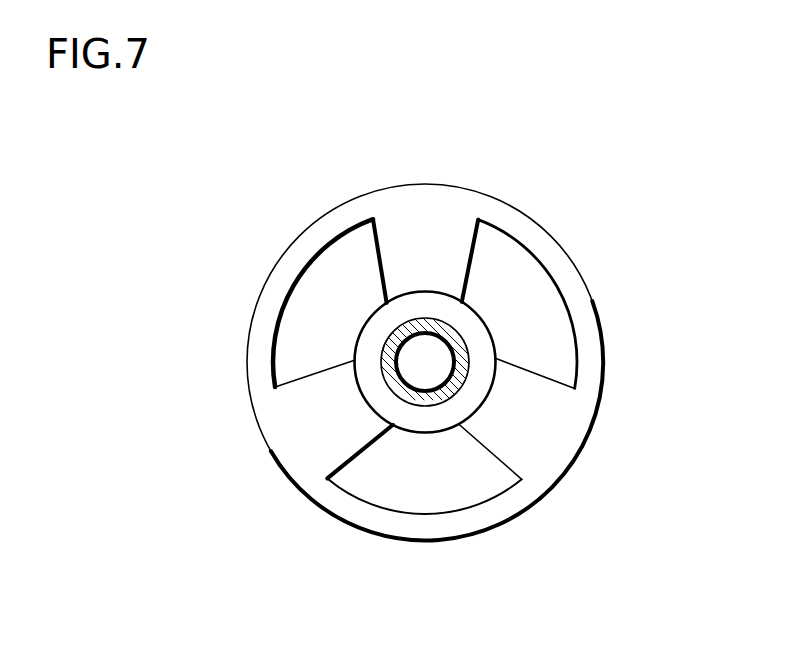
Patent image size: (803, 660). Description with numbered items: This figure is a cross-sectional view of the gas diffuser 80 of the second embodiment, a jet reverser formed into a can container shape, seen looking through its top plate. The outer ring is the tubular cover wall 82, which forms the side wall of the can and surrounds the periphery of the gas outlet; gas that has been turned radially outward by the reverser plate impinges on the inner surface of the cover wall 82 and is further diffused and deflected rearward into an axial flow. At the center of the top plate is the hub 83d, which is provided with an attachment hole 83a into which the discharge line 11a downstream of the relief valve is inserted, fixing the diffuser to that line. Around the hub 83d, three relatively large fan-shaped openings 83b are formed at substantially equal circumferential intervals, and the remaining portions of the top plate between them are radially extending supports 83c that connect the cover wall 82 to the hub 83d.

The gas diffuser 80 is at (431, 164).
The cover wall 82 is at (501, 203).
The attachment hole 83a is at (404, 358).
The fan-shaped openings 83b is at (313, 297).
The supports 83c is at (322, 393).
The hub 83d is at (372, 305).
The discharge line 11a is at (463, 343).